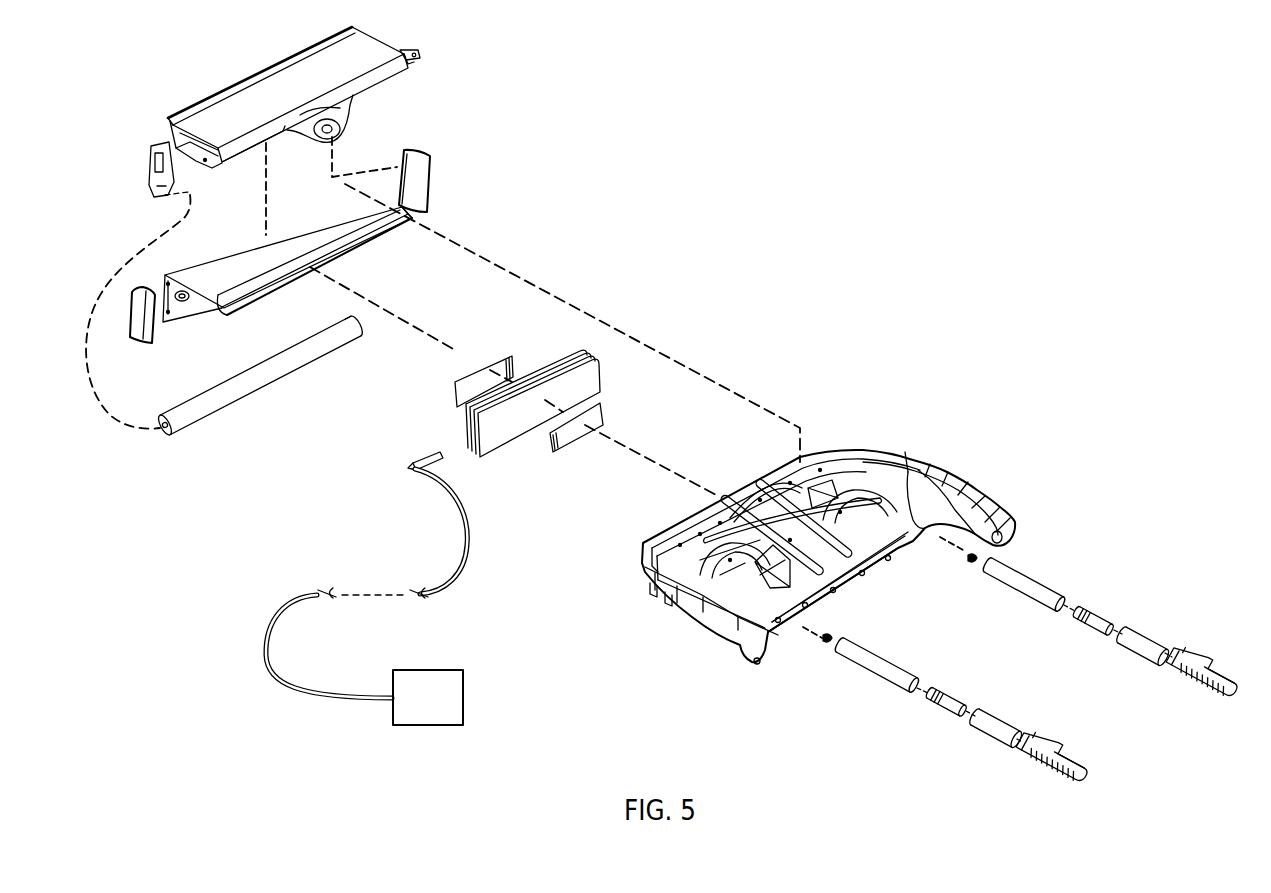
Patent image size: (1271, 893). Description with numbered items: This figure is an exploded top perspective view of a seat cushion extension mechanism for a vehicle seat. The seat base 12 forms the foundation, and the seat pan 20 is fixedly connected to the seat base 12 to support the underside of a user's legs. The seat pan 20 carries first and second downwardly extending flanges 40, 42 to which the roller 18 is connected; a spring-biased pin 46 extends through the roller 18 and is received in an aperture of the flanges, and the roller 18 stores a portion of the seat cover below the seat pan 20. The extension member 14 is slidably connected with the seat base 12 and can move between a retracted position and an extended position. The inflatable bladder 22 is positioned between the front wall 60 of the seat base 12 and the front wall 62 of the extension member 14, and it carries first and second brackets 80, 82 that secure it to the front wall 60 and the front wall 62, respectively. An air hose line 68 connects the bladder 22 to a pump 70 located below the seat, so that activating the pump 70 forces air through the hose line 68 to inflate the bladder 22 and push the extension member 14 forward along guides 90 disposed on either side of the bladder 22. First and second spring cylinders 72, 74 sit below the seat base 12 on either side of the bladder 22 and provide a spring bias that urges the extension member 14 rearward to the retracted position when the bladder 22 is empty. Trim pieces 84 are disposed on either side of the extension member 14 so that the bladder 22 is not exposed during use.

The seat base 12 is at (943, 465).
The extension member 14 is at (245, 230).
The roller 18 is at (238, 388).
The seat pan 20 is at (213, 92).
The bladder 22 is at (380, 455).
The first downwardly extending flange 40 is at (413, 73).
The second downwardly extending flange 42 is at (157, 188).
The spring-biased pin 46 is at (358, 325).
The front wall of the seat base 60 is at (890, 570).
The front wall of the extension member 62 is at (183, 313).
The air hose line 68 is at (440, 482).
The pump 70 is at (450, 670).
The first spring cylinder 72 is at (1142, 650).
The second spring cylinder 74 is at (983, 727).
The first bracket 80 is at (603, 420).
The second bracket 82 is at (458, 410).
The trim pieces 84 is at (418, 153).
The guides 90 is at (1037, 597).